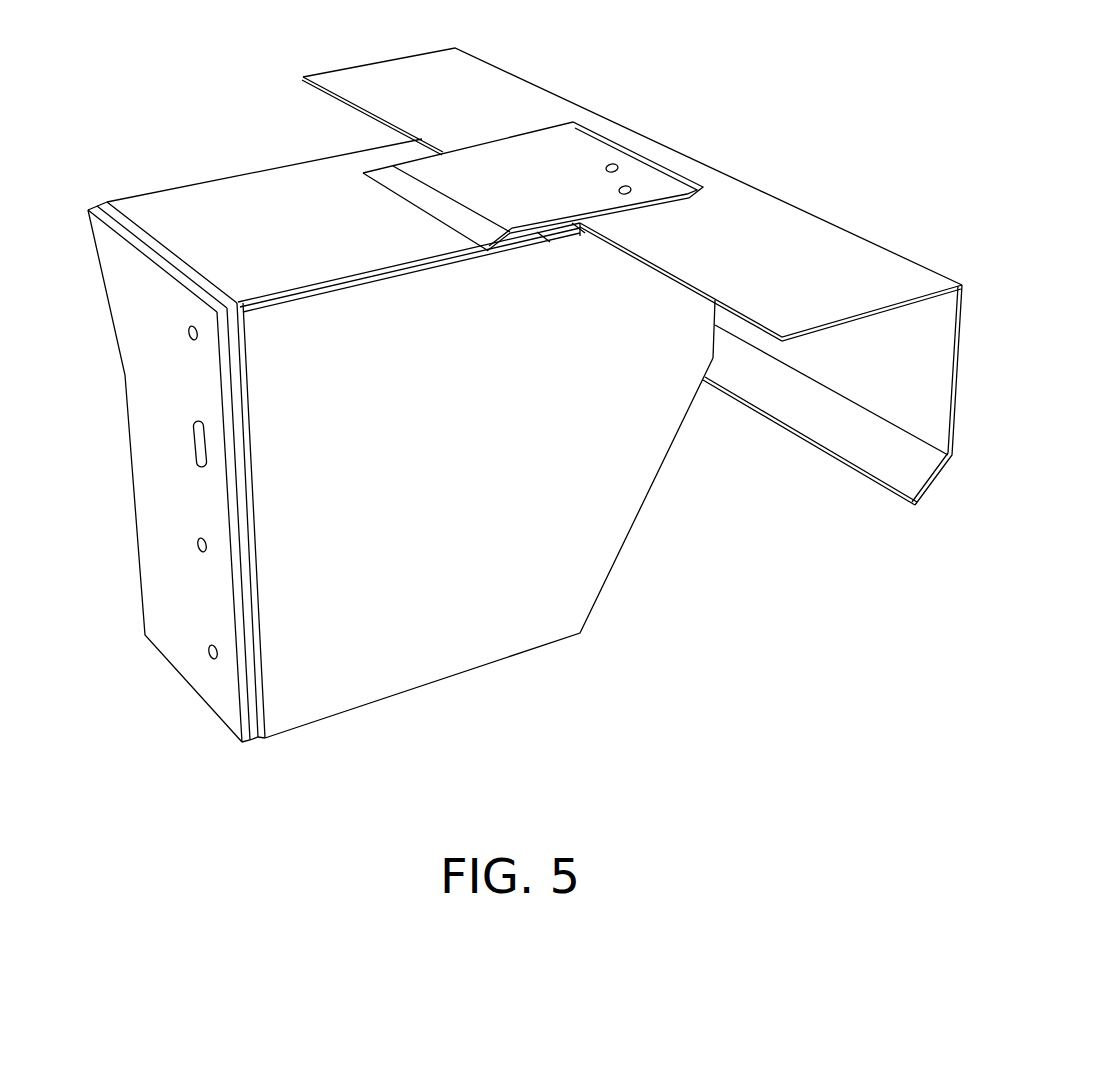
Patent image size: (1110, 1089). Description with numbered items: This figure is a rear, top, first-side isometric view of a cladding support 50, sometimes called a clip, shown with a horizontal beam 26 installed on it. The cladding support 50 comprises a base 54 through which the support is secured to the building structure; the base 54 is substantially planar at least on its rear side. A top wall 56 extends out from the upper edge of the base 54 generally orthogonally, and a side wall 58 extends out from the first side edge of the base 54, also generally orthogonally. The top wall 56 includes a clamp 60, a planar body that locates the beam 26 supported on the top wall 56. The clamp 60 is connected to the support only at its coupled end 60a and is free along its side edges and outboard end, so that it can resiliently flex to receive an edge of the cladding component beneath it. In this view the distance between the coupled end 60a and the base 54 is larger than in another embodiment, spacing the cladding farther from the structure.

The beam 26 is at (860, 443).
The cladding support 50 is at (386, 443).
The base 54 is at (145, 232).
The top wall 56 is at (268, 208).
The side wall 58 is at (553, 585).
The clamp 60 is at (476, 166).
The coupled end 60a is at (412, 190).